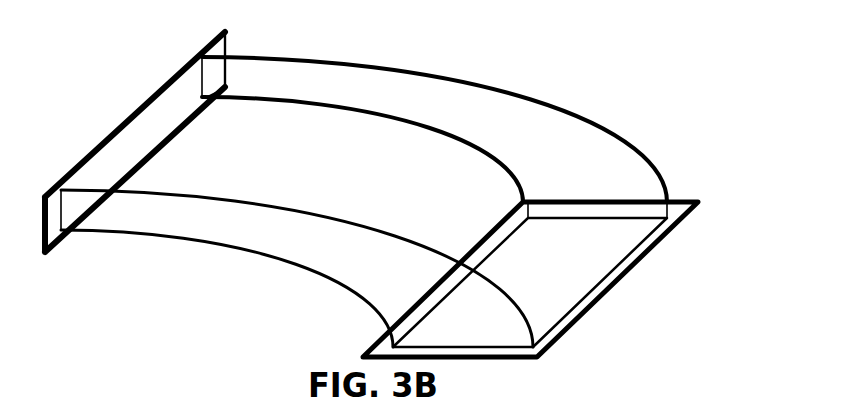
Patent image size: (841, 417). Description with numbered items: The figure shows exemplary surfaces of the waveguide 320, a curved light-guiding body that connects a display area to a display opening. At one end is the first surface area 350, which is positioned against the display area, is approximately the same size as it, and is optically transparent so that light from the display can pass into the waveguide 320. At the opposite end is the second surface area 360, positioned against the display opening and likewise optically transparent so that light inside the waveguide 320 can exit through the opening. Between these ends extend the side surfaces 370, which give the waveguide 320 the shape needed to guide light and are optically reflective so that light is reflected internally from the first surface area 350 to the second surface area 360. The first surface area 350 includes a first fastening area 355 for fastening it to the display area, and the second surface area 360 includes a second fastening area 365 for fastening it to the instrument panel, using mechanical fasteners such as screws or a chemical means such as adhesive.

The waveguide 320 is at (405, 178).
The first surface area 350 is at (567, 287).
The first fastening area 355 is at (568, 279).
The second surface area 360 is at (135, 142).
The second fastening area 365 is at (204, 43).
The side surfaces 370 is at (280, 226).